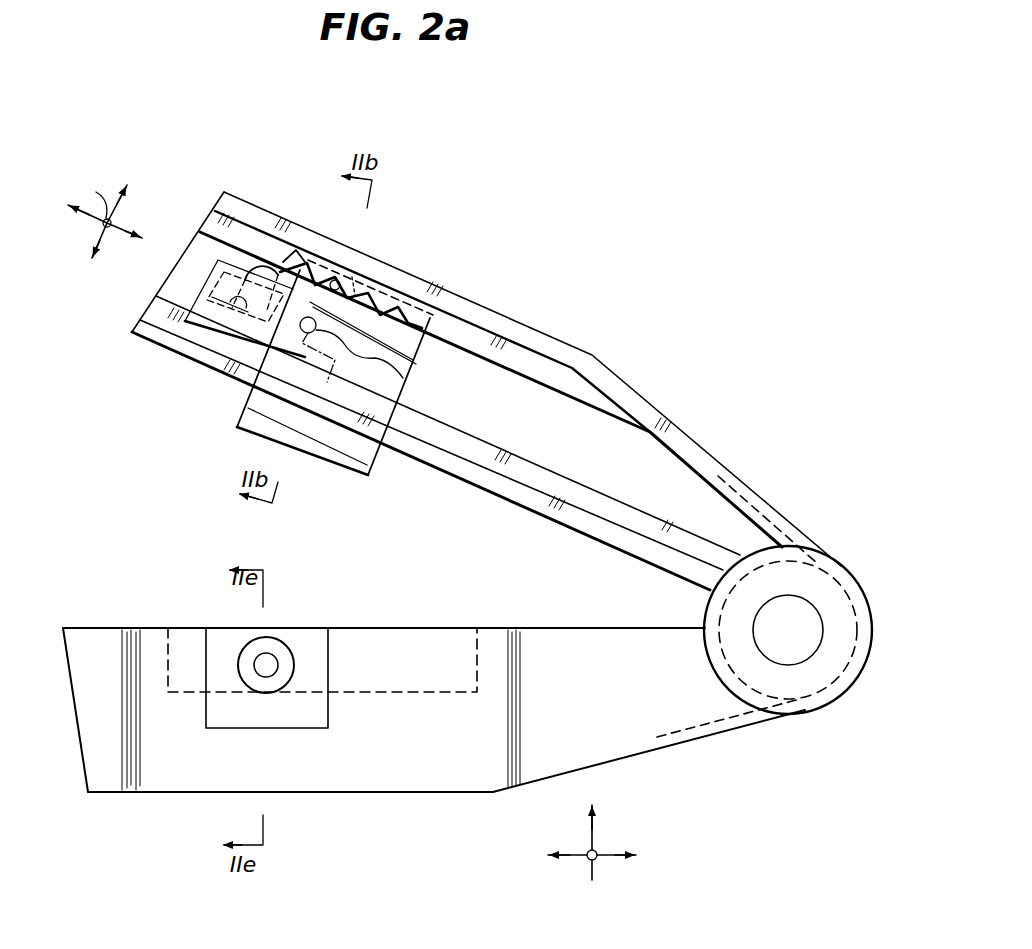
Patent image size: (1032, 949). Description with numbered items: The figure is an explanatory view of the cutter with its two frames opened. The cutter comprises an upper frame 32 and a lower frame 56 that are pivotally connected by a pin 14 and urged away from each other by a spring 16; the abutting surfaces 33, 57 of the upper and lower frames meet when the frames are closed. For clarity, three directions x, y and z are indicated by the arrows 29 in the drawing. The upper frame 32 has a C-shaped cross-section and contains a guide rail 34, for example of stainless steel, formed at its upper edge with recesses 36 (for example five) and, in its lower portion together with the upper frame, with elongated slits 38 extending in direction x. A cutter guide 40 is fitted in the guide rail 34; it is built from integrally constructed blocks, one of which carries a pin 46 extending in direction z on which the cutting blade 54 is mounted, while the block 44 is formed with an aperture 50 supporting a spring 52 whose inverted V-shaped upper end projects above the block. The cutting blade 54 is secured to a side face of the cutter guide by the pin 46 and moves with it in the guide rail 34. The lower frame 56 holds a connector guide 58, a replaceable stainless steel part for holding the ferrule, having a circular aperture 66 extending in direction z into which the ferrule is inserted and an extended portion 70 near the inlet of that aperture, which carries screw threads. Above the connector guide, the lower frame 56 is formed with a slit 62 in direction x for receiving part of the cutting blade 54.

The pin 14 is at (806, 612).
The spring 16 is at (813, 683).
The coordinate system 29 is at (95, 218).
The upper frame 32 is at (550, 343).
The abutting surface 33 is at (560, 521).
The guide rail 34 is at (468, 335).
The recesses 36 is at (350, 275).
The elongated slits 38 is at (508, 494).
The cutter guide 40 is at (289, 262).
The block 44 is at (192, 302).
The pin 46 is at (416, 370).
The aperture 50 is at (237, 303).
The spring 52 is at (250, 250).
The cutting blade 54 is at (353, 447).
The lower frame 56 is at (620, 713).
The abutting surface 57 is at (508, 628).
The connector guide 58 is at (317, 713).
The slit 62 is at (477, 650).
The aperture 66 is at (277, 662).
The extended portion 70 is at (250, 650).